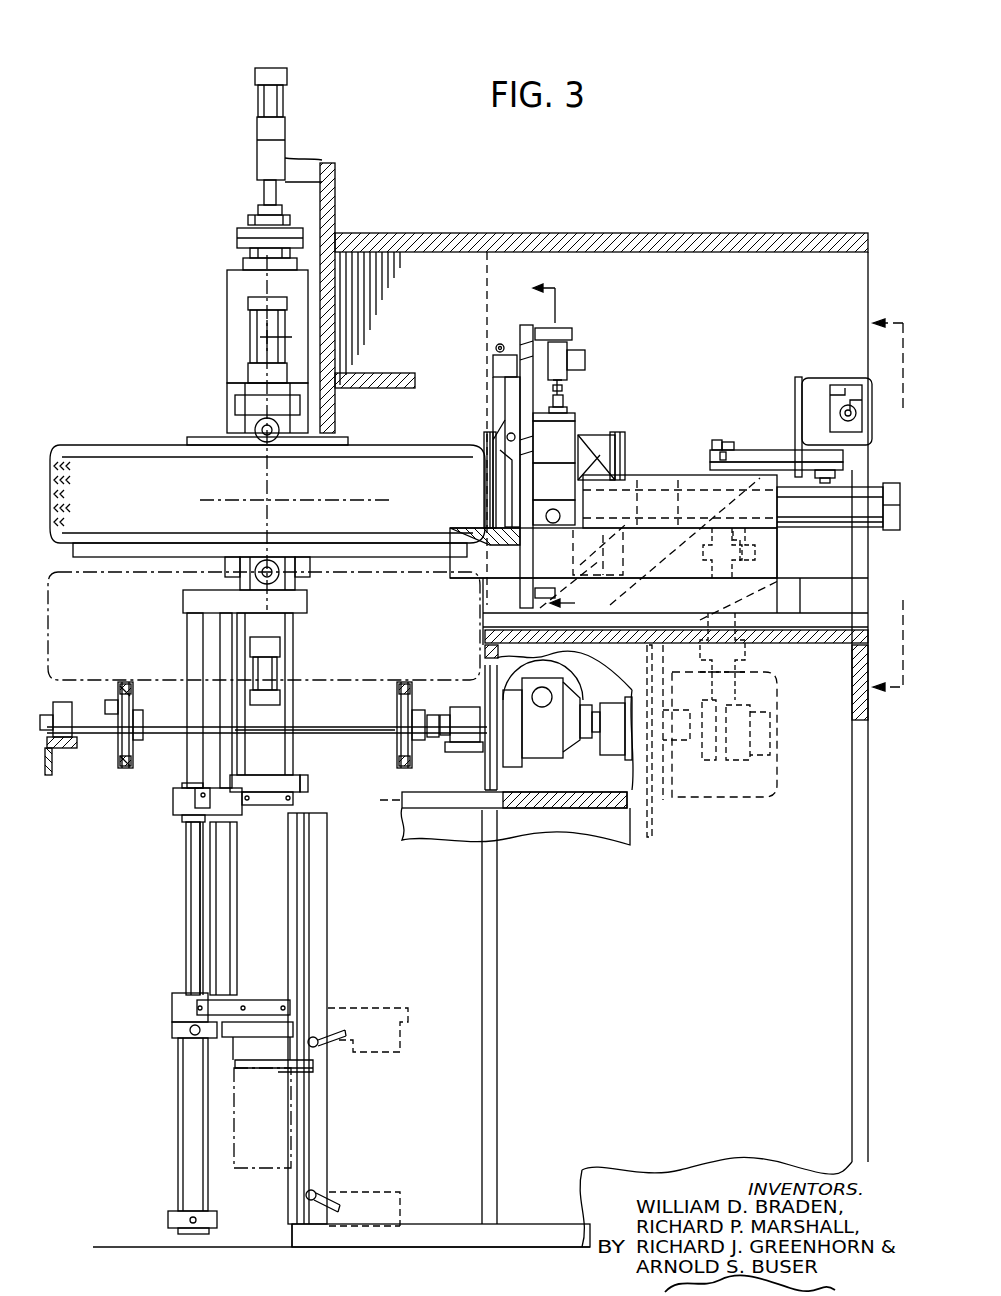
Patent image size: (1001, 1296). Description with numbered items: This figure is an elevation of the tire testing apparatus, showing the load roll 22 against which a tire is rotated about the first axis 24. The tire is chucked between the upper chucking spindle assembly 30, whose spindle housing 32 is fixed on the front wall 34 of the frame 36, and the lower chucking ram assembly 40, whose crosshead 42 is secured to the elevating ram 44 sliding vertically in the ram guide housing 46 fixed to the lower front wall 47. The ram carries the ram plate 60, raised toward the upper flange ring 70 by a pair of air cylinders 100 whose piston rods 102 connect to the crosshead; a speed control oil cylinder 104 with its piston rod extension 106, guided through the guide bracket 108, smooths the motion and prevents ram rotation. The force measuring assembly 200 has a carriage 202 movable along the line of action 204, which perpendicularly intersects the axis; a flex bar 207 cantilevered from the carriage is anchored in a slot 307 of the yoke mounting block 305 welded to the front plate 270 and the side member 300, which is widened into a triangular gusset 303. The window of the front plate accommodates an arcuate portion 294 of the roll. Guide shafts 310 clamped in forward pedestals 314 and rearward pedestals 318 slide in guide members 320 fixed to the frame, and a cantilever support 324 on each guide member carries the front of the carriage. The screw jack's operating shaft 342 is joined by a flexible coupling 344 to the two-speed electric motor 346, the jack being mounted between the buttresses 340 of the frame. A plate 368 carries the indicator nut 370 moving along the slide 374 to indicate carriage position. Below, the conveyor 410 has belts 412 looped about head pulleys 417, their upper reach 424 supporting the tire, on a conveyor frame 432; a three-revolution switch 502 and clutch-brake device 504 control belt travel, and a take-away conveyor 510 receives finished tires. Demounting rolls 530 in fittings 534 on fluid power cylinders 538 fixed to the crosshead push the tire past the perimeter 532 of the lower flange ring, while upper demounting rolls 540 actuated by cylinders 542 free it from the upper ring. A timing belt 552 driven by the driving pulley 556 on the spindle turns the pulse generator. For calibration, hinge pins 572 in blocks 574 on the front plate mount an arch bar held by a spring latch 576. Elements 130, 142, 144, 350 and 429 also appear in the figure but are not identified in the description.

The load roll 22 is at (625, 441).
The first axis 24 is at (262, 470).
The upper chucking spindle assembly 30 is at (215, 385).
The spindle housing 32 is at (228, 328).
The front wall 34 is at (322, 206).
The frame 36 is at (440, 233).
The lower chucking ram assembly 40 is at (218, 868).
The crosshead 42 is at (300, 612).
The elevating ram 44 is at (293, 707).
The ram guide housing 46 is at (310, 937).
The lower front wall 47 is at (305, 870).
The ram plate 60 is at (345, 560).
The upper flange ring 70 is at (338, 441).
The air cylinders 100 is at (205, 900).
The piston rods 102 is at (200, 752).
The speed control oil cylinder 104 is at (185, 1117).
The piston rod extension 106 is at (190, 940).
The guide bracket 108 is at (175, 800).
The rod 130 is at (266, 196).
The cylinder 142 is at (262, 100).
The bracket 144 is at (290, 158).
The force measuring assembly 200 is at (718, 410).
The carriage 202 is at (868, 540).
The line of action 204 is at (352, 502).
The flex bar 207 is at (567, 413).
The front plate 270 is at (527, 330).
The arcuate portion 294 is at (484, 480).
The side member 300 is at (655, 485).
The triangular gussets 303 is at (592, 448).
The yoke mounting block 305 is at (568, 423).
The slots 307 is at (560, 403).
The guide shafts 310 is at (835, 514).
The pedestals 314 is at (562, 498).
The pedestals 318 is at (890, 484).
The guide members 320 is at (659, 593).
The cantilever support 324 is at (703, 572).
The buttresses 340 is at (760, 462).
The operating shaft 342 is at (708, 548).
The flexible coupling 344 is at (705, 632).
The two-speed electric motor 346 is at (775, 740).
The slide 350 is at (735, 448).
The plate 368 is at (798, 380).
The indicator nut 370 is at (855, 413).
The slide 374 is at (838, 385).
The conveyor 410 is at (78, 702).
The conveyor belts 412 is at (128, 768).
The head pulleys 417 is at (420, 770).
The upper reach 424 is at (126, 683).
The shaft 429 is at (315, 732).
The conveyor frame 432 is at (67, 770).
The three-revolution switch 502 is at (745, 762).
The clutch-brake device 504 is at (676, 800).
The take-away conveyor 510 is at (505, 410).
The demounting rolls 530 is at (280, 580).
The perimeter 532 is at (178, 550).
The fittings 534 is at (300, 557).
The fluid power cylinders 538 is at (270, 668).
The upper demounting rolls 540 is at (280, 420).
The cylinders 542 is at (292, 337).
The timing belt 552 is at (250, 220).
The driving pulley 556 is at (262, 211).
The hinge pins 572 is at (515, 438).
The blocks 574 is at (490, 522).
The spring latch 576 is at (495, 364).